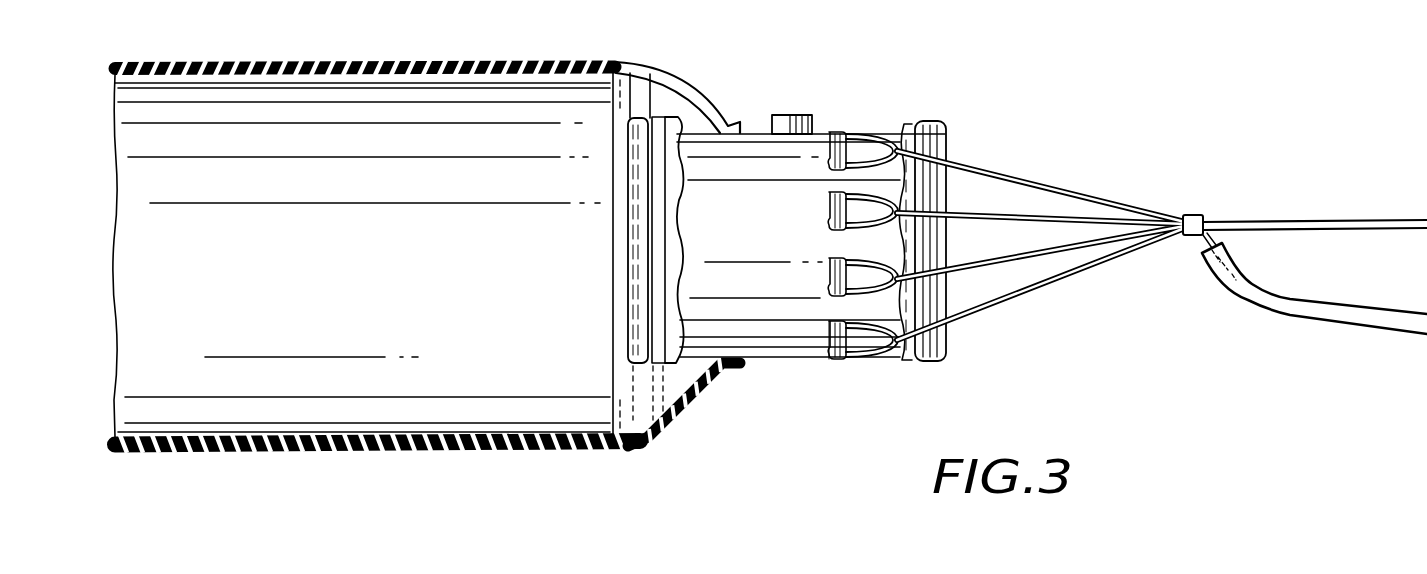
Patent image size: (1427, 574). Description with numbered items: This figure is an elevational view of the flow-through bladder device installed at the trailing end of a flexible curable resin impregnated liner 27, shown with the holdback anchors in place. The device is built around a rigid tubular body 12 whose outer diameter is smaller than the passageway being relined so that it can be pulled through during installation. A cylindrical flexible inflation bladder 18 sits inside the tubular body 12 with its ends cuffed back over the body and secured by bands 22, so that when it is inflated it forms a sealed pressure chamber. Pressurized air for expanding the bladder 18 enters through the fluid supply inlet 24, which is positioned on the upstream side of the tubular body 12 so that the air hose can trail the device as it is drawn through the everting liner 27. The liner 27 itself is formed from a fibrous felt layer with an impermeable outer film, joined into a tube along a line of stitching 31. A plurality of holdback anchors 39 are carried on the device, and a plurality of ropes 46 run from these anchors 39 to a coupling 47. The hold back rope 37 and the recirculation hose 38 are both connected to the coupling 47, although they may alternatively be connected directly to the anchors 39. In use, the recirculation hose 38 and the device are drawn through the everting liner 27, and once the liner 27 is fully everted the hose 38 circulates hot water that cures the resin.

The rigid tubular body 12 is at (788, 356).
The cylindrical flexible inflation bladder 18 is at (943, 128).
The bands 22 is at (930, 366).
The fluid supply inlet 24 is at (782, 114).
The flexible curable resin impregnated liner 27 is at (458, 66).
The line of stitching 31 is at (893, 196).
The hold back rope 37 is at (1323, 219).
The recirculation hose 38 is at (1360, 298).
The holdback anchors 39 is at (830, 361).
The ropes 46 is at (1130, 201).
The coupling 47 is at (1193, 214).